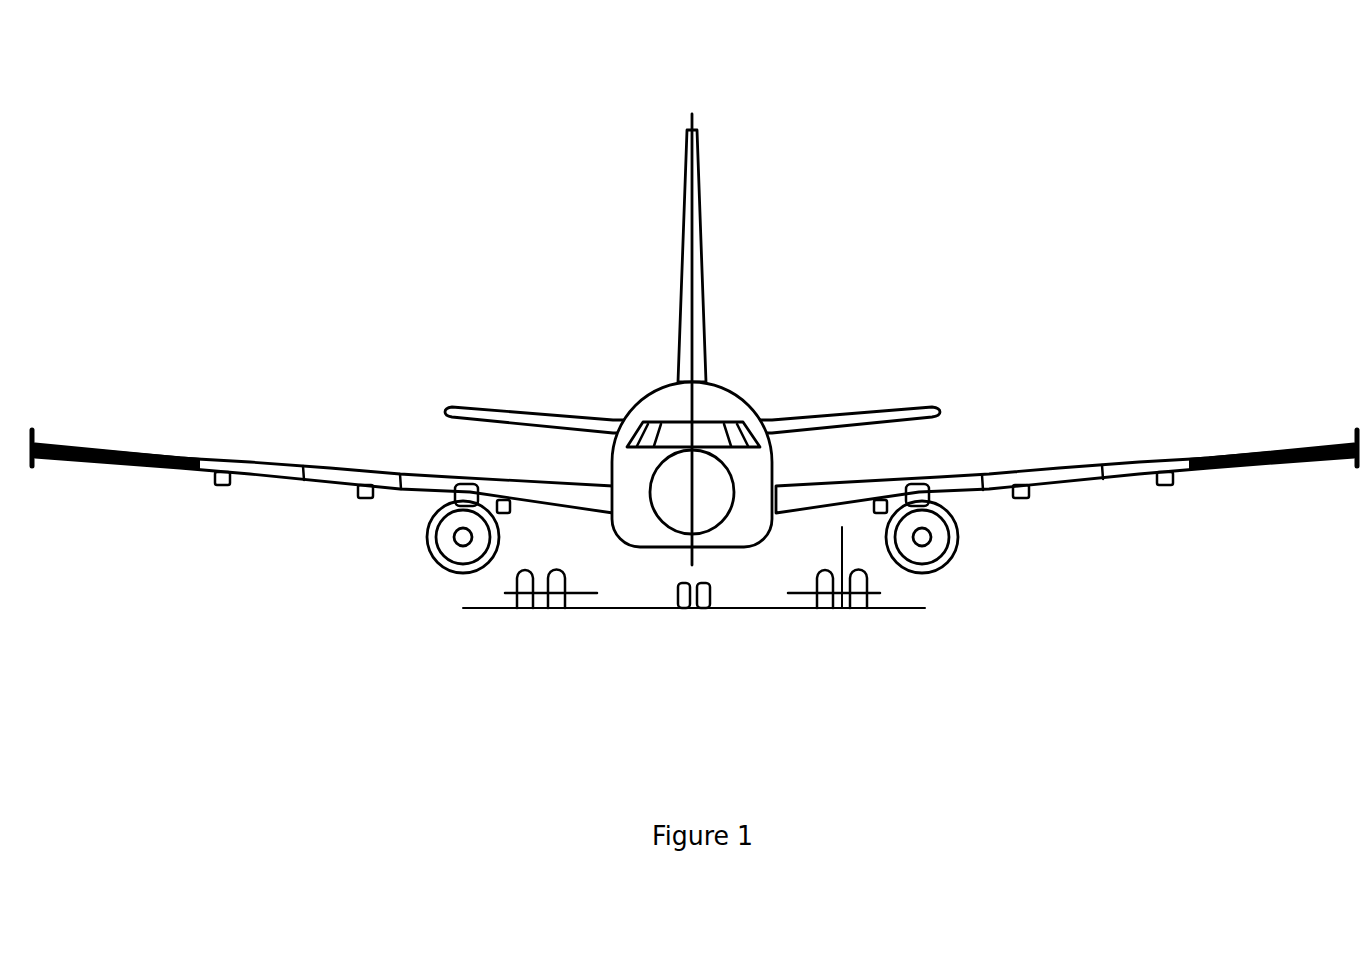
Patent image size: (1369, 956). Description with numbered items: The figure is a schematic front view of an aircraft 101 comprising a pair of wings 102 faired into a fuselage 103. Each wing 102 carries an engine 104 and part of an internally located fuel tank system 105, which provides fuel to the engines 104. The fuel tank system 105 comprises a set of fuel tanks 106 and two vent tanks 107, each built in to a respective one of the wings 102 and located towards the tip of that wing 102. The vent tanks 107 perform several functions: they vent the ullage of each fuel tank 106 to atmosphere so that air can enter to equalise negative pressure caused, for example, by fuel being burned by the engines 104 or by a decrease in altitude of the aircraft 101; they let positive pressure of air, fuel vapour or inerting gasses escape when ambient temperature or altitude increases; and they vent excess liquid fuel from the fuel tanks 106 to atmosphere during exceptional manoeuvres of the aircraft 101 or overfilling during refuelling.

The aircraft 101 is at (503, 268).
The wing 102 is at (218, 485).
The fuselage 103 is at (738, 397).
The engine 104 is at (461, 562).
The fuel tank system 105 is at (250, 462).
The fuel tank 106 is at (303, 463).
The vent tank 107 is at (68, 445).